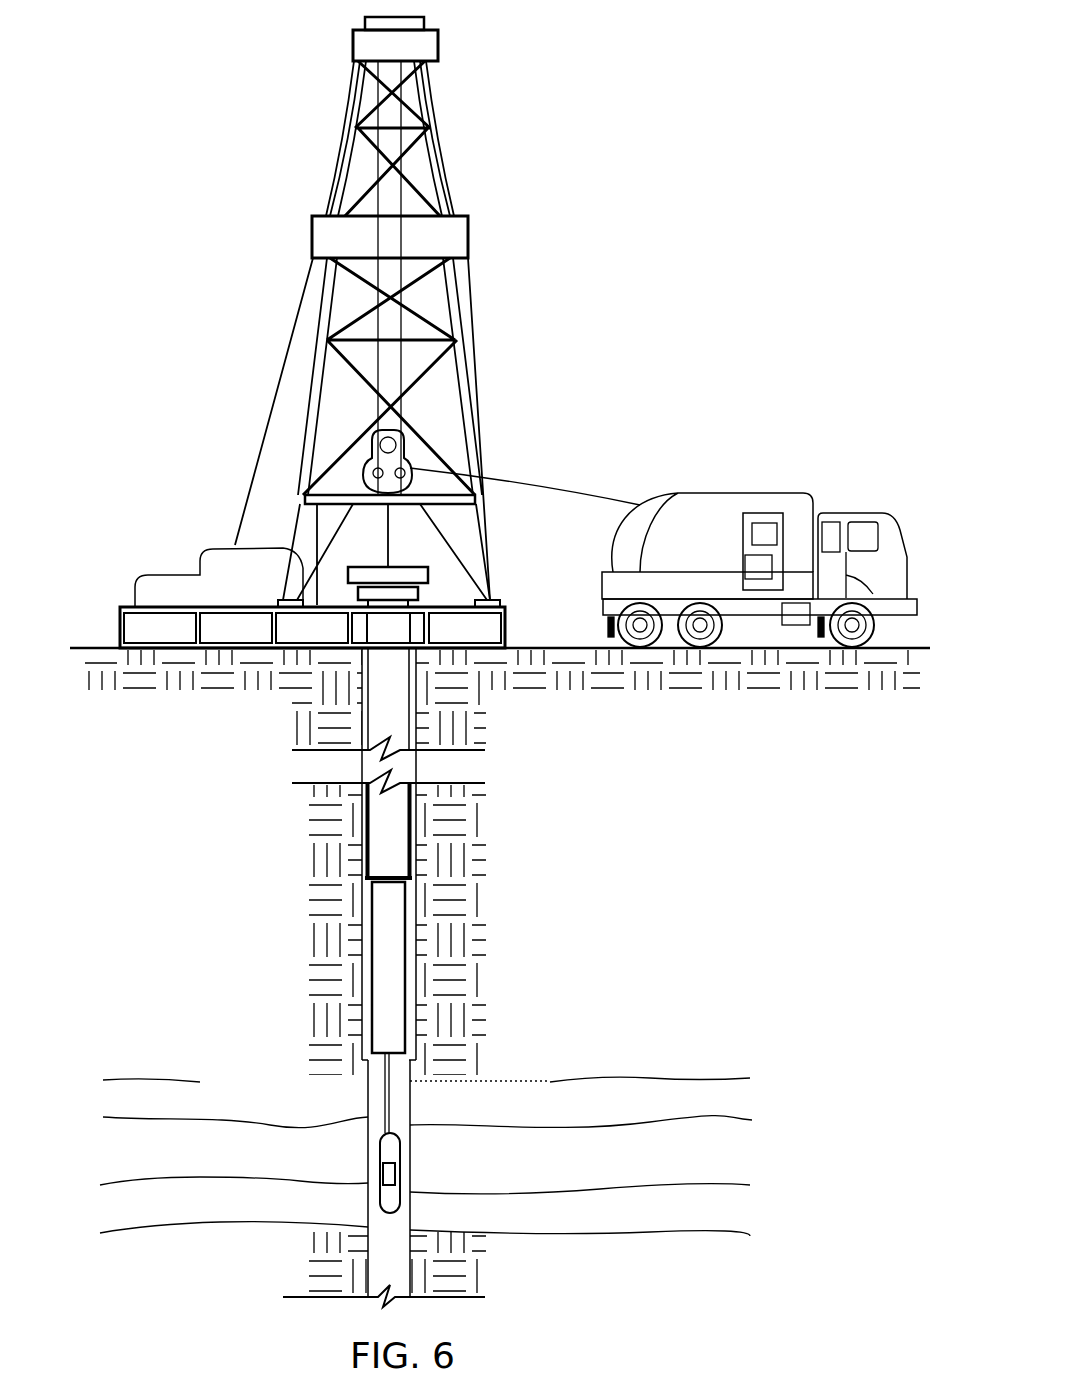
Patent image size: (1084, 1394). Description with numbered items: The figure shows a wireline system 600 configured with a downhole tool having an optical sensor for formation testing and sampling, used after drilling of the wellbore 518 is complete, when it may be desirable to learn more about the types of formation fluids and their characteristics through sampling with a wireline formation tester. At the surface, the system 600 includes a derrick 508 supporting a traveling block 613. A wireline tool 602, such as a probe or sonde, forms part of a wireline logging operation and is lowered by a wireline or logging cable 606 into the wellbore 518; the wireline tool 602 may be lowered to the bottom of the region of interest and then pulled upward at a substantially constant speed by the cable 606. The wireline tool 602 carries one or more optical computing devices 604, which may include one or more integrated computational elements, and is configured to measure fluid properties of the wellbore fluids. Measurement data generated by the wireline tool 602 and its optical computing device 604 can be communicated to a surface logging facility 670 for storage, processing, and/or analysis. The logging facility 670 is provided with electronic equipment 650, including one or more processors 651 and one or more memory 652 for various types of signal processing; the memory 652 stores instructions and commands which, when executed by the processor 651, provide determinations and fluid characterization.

The wireline system 600 is at (661, 190).
The traveling block 613 is at (408, 433).
The derrick 508 is at (540, 572).
The wireline or logging cable 606 is at (585, 468).
The wireline tool 602 is at (400, 1135).
The optical computing device 604 is at (400, 1173).
The wellbore 518 is at (367, 1096).
The surface logging facility 670 is at (753, 465).
The electronic equipment 650 is at (740, 572).
The memory 652 is at (770, 523).
The processor 651 is at (756, 565).